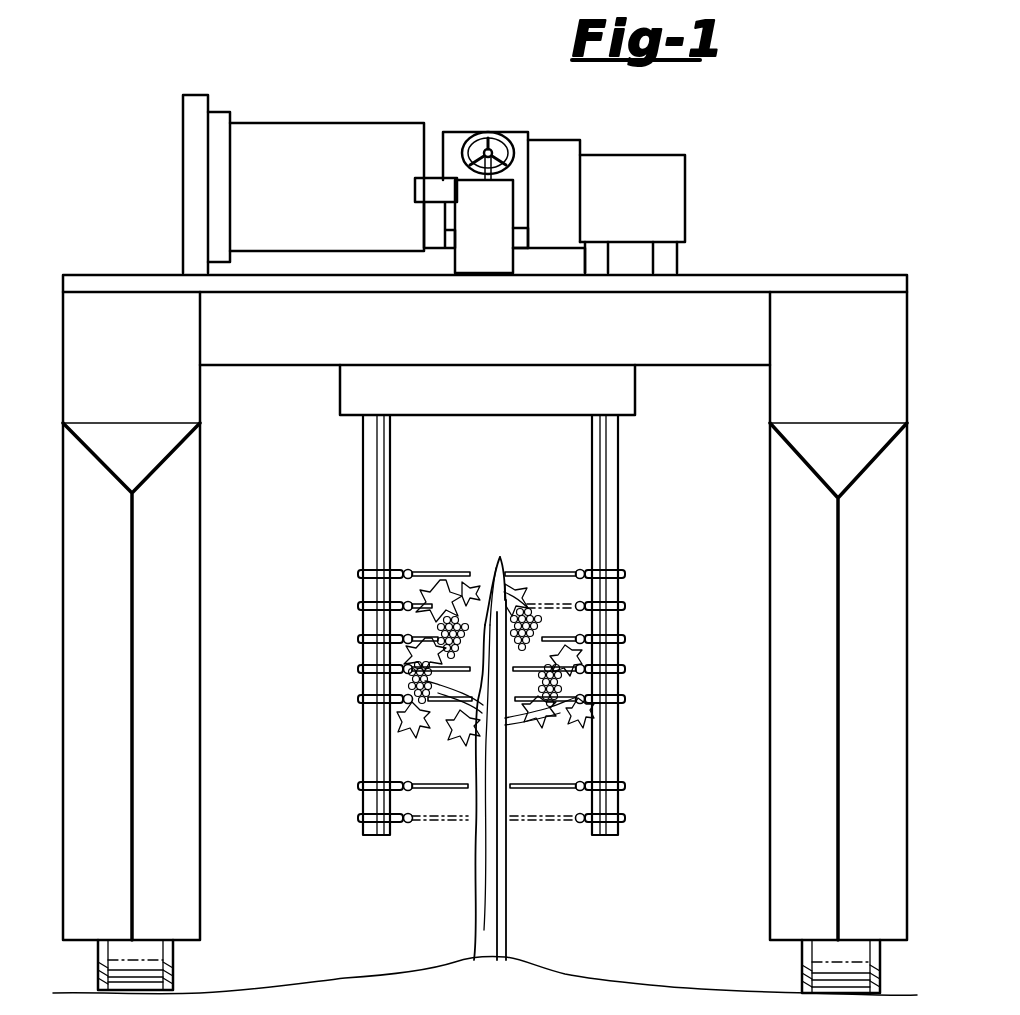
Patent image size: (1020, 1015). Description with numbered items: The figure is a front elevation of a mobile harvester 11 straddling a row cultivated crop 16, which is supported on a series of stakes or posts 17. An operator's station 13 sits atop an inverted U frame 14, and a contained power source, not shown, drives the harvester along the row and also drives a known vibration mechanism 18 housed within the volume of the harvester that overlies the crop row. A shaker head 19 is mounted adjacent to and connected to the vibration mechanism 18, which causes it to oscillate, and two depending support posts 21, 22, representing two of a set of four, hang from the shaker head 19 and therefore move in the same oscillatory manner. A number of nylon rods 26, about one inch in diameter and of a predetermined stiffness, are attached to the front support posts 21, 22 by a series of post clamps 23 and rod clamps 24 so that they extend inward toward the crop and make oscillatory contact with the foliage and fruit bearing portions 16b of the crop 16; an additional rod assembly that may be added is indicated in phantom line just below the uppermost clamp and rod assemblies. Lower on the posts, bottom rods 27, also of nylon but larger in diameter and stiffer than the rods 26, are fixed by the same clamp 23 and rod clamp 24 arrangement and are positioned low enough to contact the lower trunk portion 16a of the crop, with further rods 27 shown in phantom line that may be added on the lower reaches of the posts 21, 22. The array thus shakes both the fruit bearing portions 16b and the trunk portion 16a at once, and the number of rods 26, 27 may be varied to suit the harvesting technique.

The mobile harvester 11 is at (774, 210).
The operator's station 13 is at (489, 262).
The inverted "U" frame 14 is at (61, 307).
The row cultivated crop 16 is at (500, 758).
The lower trunk portion 16a is at (477, 892).
The foliage and fruit bearing portions 16b is at (491, 560).
The stakes or posts 17 is at (508, 922).
The vibration mechanism 18 is at (668, 350).
The shaker head 19 is at (338, 392).
The depending post 21 is at (618, 453).
The depending post 22 is at (372, 460).
The post clamps 23 is at (358, 574).
The rod clamps 24 is at (427, 566).
The nylon rods 26 is at (440, 585).
The bottom rods 27 is at (435, 782).